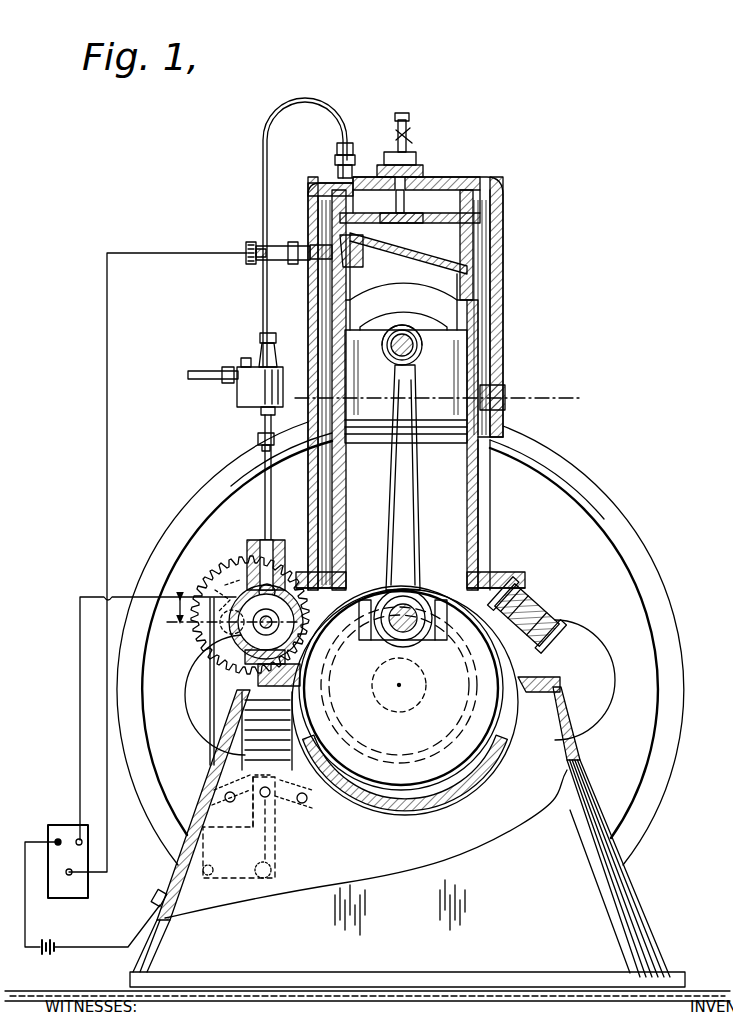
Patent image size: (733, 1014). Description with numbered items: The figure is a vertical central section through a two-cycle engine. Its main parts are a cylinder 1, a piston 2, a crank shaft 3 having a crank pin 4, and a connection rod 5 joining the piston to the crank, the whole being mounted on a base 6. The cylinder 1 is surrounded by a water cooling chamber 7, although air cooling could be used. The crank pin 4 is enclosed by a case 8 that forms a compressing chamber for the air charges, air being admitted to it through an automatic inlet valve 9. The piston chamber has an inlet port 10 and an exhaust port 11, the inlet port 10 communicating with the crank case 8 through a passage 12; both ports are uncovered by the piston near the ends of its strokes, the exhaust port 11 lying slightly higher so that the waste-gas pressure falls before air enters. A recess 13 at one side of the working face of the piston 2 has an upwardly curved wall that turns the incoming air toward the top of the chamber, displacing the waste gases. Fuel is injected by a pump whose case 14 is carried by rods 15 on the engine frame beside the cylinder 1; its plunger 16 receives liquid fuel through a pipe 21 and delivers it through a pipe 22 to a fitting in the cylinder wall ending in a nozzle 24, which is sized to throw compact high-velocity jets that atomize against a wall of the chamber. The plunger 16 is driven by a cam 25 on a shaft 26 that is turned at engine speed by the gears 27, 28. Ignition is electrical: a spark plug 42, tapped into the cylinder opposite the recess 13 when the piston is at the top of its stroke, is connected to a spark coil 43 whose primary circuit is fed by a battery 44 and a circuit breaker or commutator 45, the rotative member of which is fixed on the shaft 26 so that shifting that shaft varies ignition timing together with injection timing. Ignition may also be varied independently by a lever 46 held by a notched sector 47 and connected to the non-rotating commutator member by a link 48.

The cylinder 1 is at (482, 497).
The piston 2 is at (440, 440).
The crank shaft 3 is at (420, 688).
The crank pin 4 is at (392, 640).
The connection rod 5 is at (412, 505).
The base 6 is at (577, 762).
The water cooling chamber 7 is at (503, 228).
The case 8 is at (347, 806).
The automatic inlet valve 9 is at (537, 598).
The inlet port 10 is at (350, 386).
The exhaust port 11 is at (502, 388).
The passage 12 is at (274, 545).
The recess 13 is at (372, 262).
The pump case 14 is at (250, 392).
The rods 15 is at (258, 447).
The plunger 16 is at (256, 478).
The pipe 21 is at (205, 370).
The pipe 22 is at (335, 106).
The nozzle 24 is at (438, 228).
The cam 25 is at (262, 640).
The shaft 26 is at (362, 625).
The gear 27 is at (200, 650).
The gear 28 is at (360, 750).
The spark plug 42 is at (283, 242).
The spark coil 43 is at (76, 892).
The battery 44 is at (57, 952).
The circuit breaker or commutator 45 is at (236, 560).
The lever 46 is at (274, 836).
The notched sector 47 is at (288, 738).
The link 48 is at (228, 738).